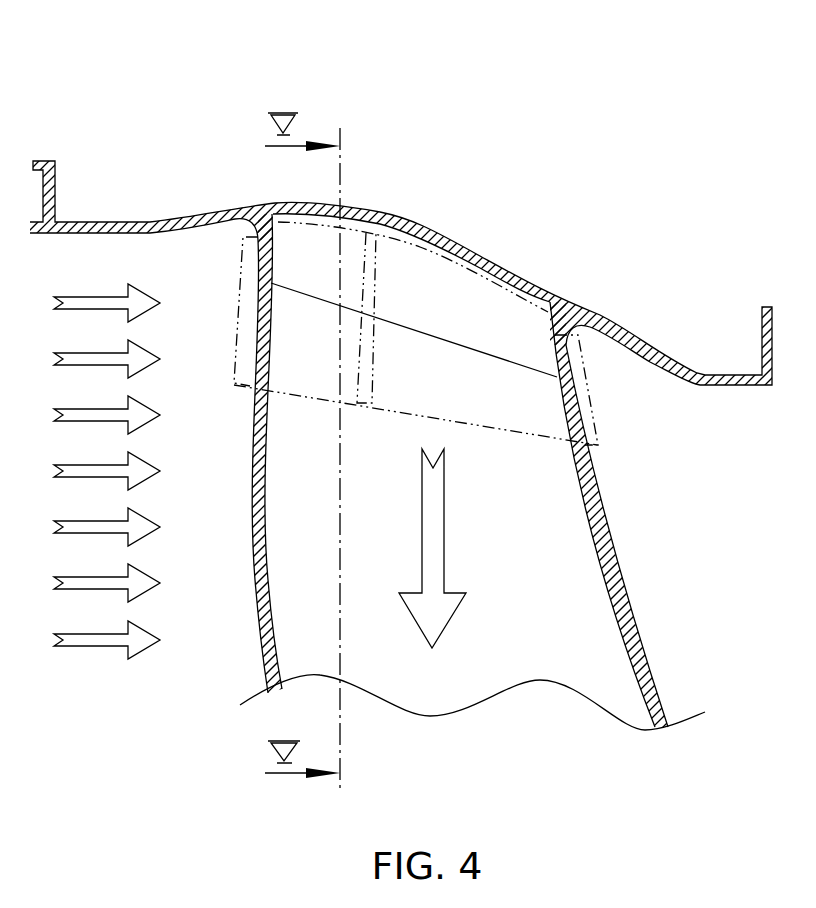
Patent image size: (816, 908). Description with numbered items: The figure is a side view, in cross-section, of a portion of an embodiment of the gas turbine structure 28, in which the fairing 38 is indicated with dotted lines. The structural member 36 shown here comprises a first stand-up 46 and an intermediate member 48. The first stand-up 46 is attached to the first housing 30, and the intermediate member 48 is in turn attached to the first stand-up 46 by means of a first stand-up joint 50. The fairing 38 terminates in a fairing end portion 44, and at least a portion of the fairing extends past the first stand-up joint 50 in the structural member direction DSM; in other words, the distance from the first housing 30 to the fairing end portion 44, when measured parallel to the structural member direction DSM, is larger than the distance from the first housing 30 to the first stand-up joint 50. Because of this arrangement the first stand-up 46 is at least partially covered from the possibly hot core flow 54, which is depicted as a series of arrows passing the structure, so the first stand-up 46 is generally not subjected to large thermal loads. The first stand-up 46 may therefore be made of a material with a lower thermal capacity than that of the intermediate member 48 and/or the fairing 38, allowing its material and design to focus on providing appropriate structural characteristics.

The gas turbine structure 28 is at (179, 60).
The first housing 30 is at (652, 332).
The structural member 36 is at (212, 516).
The fairing 38 is at (230, 387).
The fairing end portion 44 is at (312, 410).
The first stand-up 46 is at (466, 303).
The intermediate member 48 is at (562, 583).
The first stand-up joint 50 is at (586, 390).
The core flow 54 is at (100, 455).
The structural member direction DSM is at (433, 520).